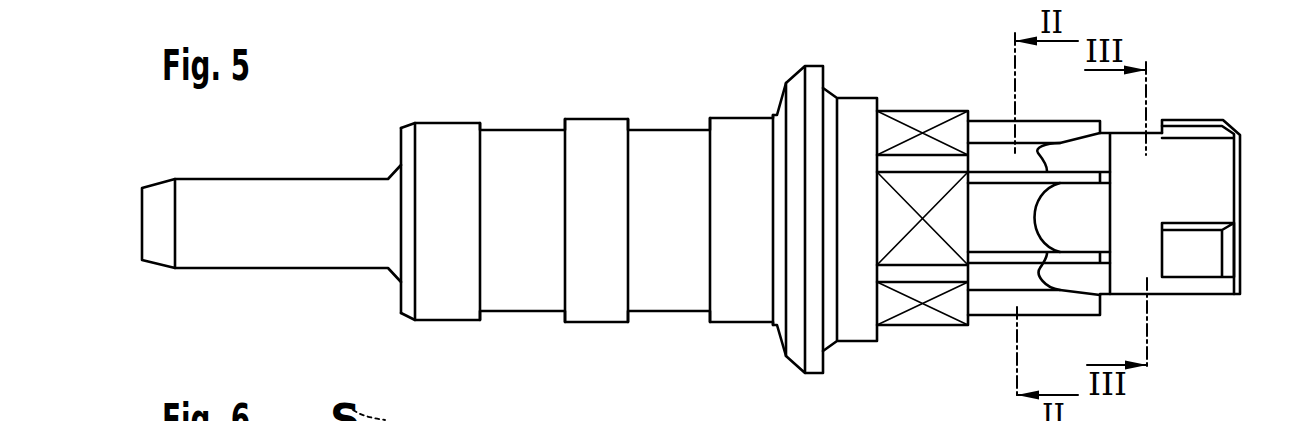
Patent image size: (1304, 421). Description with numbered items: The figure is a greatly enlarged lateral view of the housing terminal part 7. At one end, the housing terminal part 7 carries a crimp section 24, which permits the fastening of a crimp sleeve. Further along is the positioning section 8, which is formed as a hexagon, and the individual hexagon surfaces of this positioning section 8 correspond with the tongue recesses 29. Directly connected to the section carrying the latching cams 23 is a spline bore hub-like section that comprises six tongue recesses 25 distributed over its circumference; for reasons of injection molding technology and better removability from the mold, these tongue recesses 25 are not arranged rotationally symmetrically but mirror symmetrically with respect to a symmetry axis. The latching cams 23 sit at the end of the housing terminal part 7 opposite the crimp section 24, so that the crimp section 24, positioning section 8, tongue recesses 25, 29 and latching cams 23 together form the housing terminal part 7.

The housing terminal part 7 is at (805, 67).
The positioning section 8 is at (922, 120).
The latching cams 23 is at (1197, 121).
The crimp section 24 is at (522, 146).
The tongue recesses 25 is at (1023, 178).
The tongue recesses 29 is at (1025, 275).